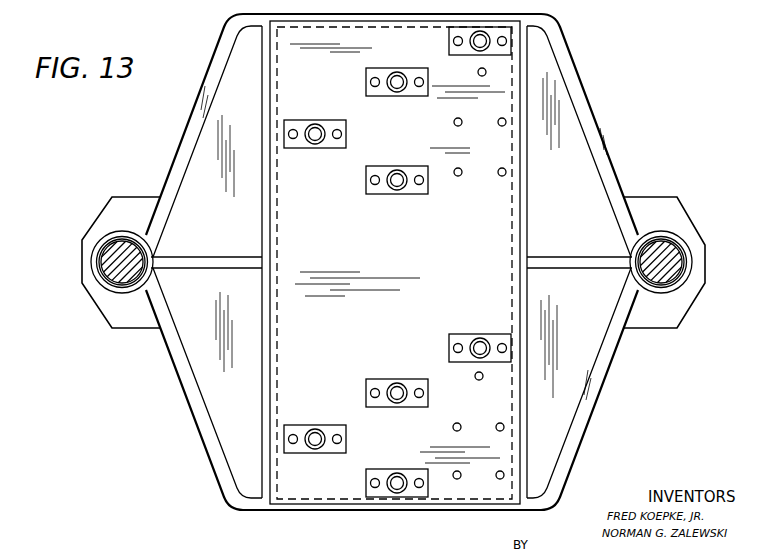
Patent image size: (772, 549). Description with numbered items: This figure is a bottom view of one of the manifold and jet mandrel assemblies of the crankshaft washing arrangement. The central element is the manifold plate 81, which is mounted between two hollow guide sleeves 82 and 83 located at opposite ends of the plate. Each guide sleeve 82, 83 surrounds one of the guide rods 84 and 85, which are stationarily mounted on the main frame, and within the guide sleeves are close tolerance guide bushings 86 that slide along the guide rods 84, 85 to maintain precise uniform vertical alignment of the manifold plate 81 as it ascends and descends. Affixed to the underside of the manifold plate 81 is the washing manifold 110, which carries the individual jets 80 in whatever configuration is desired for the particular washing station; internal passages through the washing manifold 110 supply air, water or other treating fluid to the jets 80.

The jets 80 is at (392, 190).
The manifold plate 81 is at (582, 218).
The guide sleeve 82 is at (95, 262).
The guide sleeve 83 is at (693, 276).
The guide rod 84 is at (113, 282).
The guide rod 85 is at (668, 250).
The guide bushings 86 is at (128, 284).
The washing manifold 110 is at (448, 261).